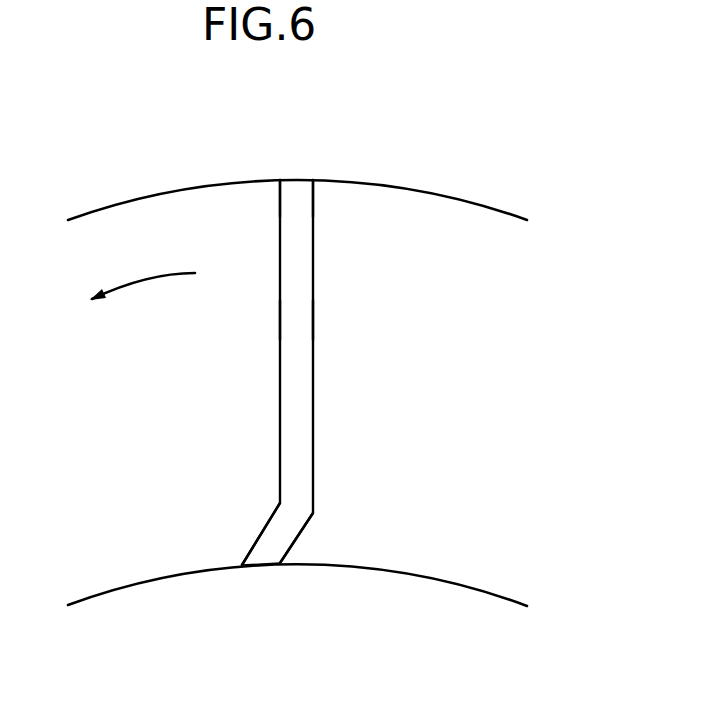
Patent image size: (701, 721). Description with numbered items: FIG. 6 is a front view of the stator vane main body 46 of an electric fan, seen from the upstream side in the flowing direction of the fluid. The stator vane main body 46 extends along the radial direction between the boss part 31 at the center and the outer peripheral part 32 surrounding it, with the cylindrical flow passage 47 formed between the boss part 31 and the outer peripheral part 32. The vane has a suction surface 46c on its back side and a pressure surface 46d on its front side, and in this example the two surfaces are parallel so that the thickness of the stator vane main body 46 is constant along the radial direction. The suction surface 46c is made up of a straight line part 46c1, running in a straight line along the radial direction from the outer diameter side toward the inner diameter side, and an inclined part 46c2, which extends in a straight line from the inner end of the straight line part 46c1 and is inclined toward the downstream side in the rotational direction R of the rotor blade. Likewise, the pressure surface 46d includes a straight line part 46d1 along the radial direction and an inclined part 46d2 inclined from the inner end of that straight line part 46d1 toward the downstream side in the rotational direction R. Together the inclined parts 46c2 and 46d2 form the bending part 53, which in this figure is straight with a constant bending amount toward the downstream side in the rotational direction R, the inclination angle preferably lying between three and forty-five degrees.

The boss part 31 is at (286, 645).
The outer peripheral part 32 is at (285, 123).
The stator vane main body 46 is at (314, 265).
The suction surface 46c is at (280, 217).
The pressure surface 46d is at (313, 217).
The straight line part 46c1 is at (280, 318).
The straight line part 46d1 is at (313, 318).
The inclined part 46c2 is at (247, 560).
The inclined part 46d2 is at (280, 558).
The flow passage 47 is at (120, 372).
The bending part 53 is at (265, 556).
The rotational direction R is at (145, 280).